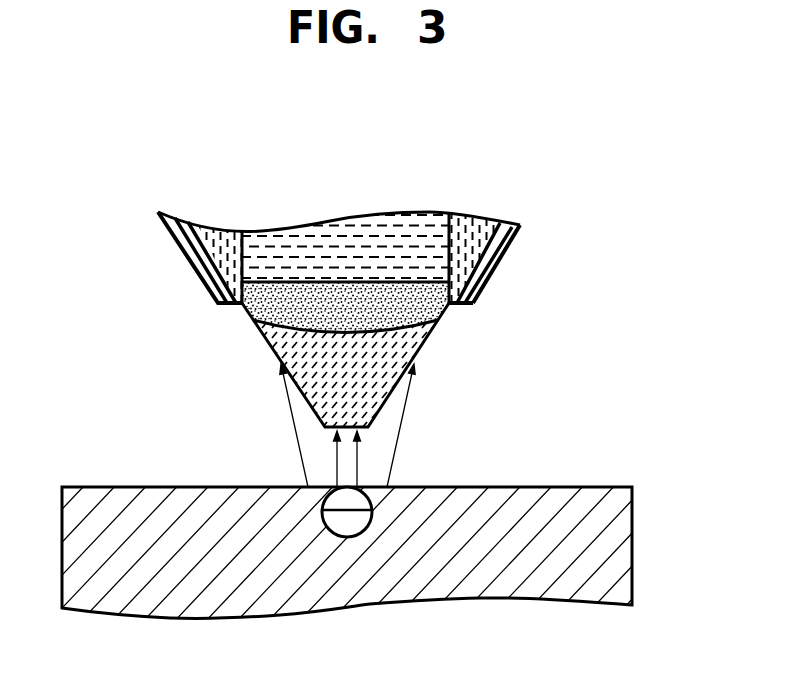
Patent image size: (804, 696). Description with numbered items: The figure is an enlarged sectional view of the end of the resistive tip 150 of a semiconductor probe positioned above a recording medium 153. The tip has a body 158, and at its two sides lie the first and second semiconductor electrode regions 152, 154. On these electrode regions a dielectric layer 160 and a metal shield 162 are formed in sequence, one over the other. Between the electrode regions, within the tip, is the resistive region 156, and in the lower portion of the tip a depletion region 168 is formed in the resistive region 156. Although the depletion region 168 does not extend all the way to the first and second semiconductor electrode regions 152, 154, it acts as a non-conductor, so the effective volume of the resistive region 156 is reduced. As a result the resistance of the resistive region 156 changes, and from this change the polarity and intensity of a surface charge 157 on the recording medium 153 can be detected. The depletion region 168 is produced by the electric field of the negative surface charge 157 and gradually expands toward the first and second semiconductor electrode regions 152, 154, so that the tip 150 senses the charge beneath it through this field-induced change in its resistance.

The resistive tip 150 is at (478, 340).
The first semiconductor electrode region 152 is at (218, 228).
The recording medium 153 is at (622, 535).
The second semiconductor electrode region 154 is at (462, 212).
The resistive region 156 is at (268, 310).
The surface charge 157 is at (367, 487).
The body 158 is at (350, 225).
The dielectric layer 160 is at (500, 223).
The metal shield 162 is at (502, 263).
The depletion region 168 is at (295, 342).